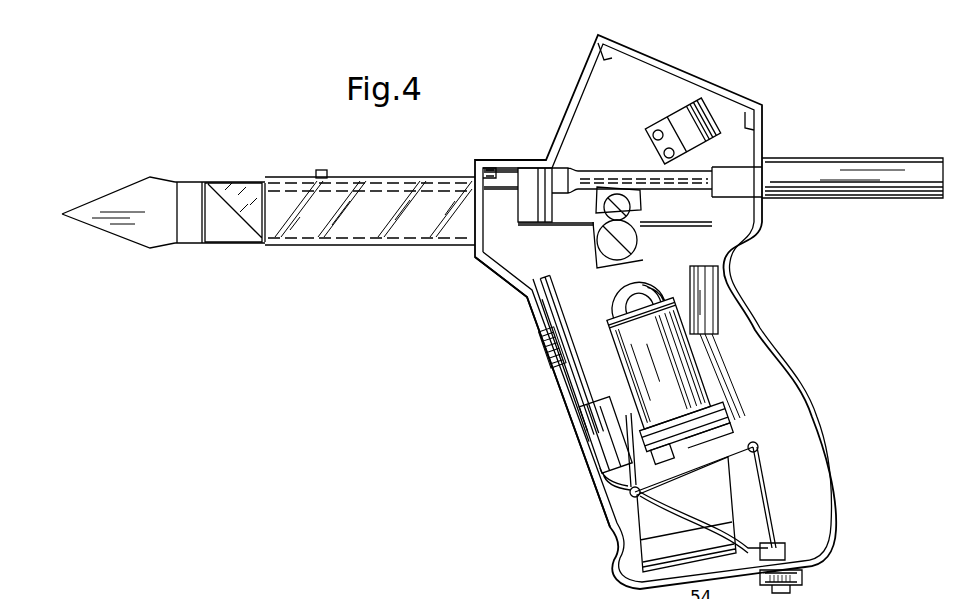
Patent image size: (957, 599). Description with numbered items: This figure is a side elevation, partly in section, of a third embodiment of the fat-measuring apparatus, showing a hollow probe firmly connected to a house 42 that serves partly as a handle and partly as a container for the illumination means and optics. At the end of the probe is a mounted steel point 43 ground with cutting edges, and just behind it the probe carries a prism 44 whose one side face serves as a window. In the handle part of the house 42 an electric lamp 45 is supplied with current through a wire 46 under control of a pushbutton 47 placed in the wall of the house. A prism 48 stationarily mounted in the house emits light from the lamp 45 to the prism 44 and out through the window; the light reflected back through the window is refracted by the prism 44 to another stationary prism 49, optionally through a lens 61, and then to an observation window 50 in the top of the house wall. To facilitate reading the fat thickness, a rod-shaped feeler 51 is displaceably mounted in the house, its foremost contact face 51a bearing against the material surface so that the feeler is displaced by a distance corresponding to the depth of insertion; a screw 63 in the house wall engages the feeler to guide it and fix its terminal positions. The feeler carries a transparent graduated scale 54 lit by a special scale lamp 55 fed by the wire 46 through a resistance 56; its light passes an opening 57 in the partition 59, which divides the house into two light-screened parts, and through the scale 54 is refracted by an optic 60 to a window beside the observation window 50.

The house 42 is at (500, 266).
The steel point 43 is at (134, 194).
The prism 44 is at (248, 187).
The electric lamp 45 is at (648, 290).
The wire 46 is at (795, 584).
The pushbutton 47 is at (522, 342).
The prism 48 is at (590, 232).
The prism 49 is at (636, 200).
The observation window 50 is at (678, 74).
The rod-shaped feeler 51 is at (350, 176).
The contact face 51a is at (320, 170).
The graduated scale 54 is at (618, 174).
The scale lamp 55 is at (705, 264).
The resistance 56 is at (688, 548).
The opening 57 is at (700, 224).
The partition 59 is at (669, 224).
The optic 60 is at (676, 117).
The lens 61 is at (520, 210).
The screw 63 is at (490, 166).